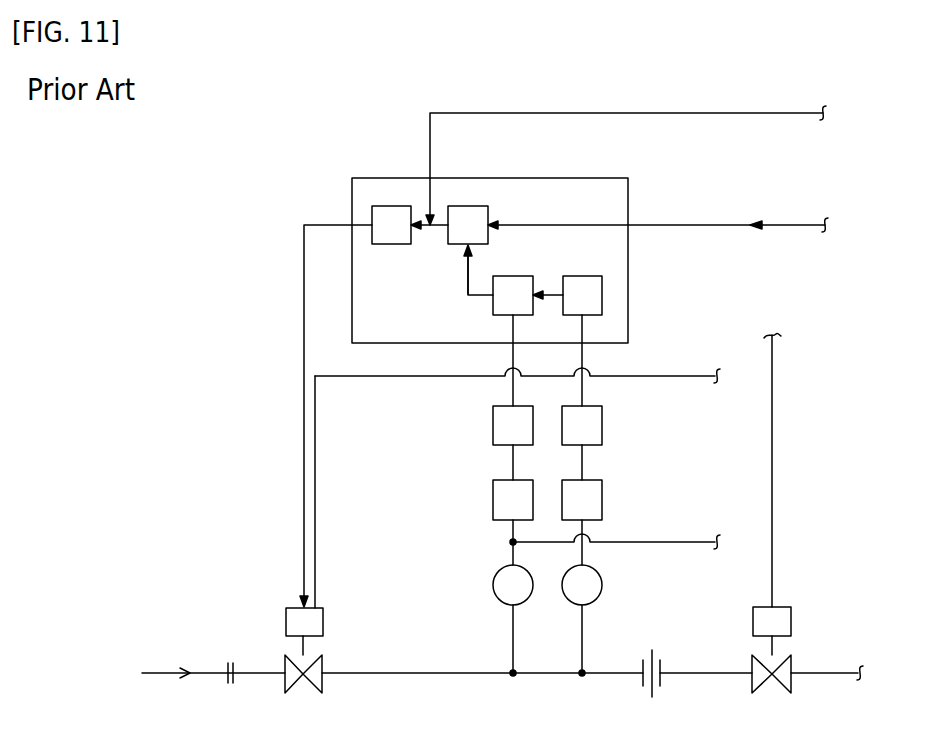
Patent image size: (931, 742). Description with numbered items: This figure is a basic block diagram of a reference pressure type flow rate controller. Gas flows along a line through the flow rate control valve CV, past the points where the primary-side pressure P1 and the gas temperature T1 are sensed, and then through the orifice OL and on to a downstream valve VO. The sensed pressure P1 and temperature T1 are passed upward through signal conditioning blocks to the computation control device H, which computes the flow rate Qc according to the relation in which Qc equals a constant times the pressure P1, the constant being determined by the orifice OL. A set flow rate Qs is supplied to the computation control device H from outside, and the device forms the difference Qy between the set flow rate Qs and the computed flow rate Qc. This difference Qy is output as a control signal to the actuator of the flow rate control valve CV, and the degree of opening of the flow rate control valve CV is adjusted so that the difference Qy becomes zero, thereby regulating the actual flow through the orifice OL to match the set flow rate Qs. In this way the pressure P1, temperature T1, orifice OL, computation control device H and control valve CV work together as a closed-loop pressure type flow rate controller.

The computation control device H is at (562, 178).
The set flow rate Qs is at (757, 221).
The computed flow rate Qc is at (466, 253).
The flow rate difference Qy is at (295, 316).
The pressure P1 is at (513, 585).
The gas temperature T1 is at (582, 585).
The flow rate control valve CV is at (265, 650).
The orifice OL is at (654, 690).
The valve VO is at (792, 682).